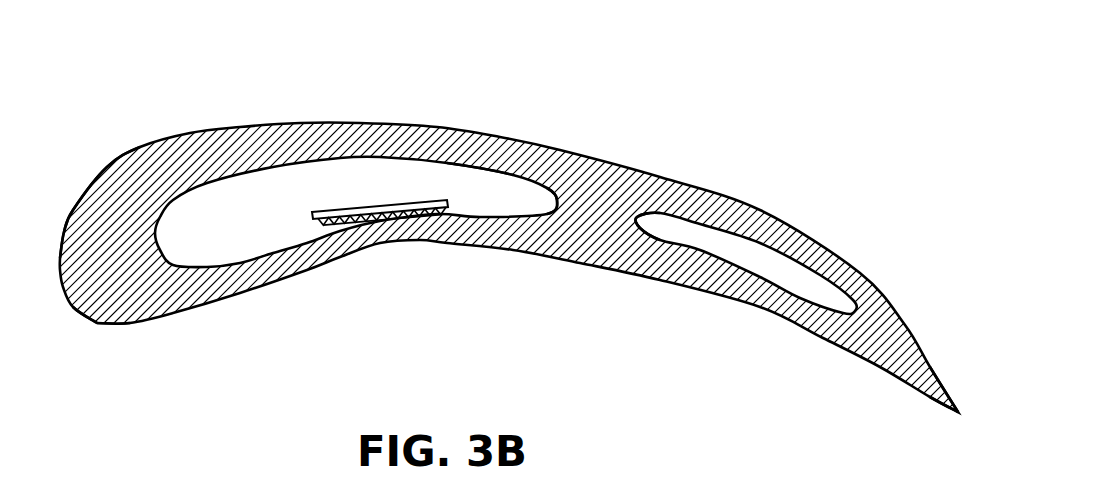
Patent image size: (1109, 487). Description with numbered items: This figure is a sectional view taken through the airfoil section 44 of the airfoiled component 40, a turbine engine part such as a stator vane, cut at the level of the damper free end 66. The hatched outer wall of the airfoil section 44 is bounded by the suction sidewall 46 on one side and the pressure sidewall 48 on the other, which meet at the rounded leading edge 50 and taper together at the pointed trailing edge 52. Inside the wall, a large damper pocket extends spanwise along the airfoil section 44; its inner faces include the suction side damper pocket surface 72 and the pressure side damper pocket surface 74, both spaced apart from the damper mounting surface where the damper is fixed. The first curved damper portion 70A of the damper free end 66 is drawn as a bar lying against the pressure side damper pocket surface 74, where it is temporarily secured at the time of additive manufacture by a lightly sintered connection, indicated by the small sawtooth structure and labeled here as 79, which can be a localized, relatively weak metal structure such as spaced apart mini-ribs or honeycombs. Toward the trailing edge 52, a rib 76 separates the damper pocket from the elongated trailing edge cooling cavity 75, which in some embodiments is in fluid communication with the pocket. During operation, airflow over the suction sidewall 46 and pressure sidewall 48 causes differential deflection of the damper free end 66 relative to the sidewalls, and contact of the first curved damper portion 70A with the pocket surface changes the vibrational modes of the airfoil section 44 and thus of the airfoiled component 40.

The airfoiled component 40 is at (742, 105).
The airfoil section 44 is at (94, 132).
The suction sidewall 46 is at (437, 118).
The pressure sidewall 48 is at (546, 268).
The leading edge 50 is at (76, 339).
The trailing edge 52 is at (946, 429).
The suction side damper pocket surface 72 is at (268, 248).
The trailing edge cooling cavity 75 is at (693, 240).
The rib 76 is at (580, 213).
The pressure side damper pocket surface 74 is at (468, 162).
The first curved damper portion 70A is at (387, 210).
The bond layer 79 is at (358, 223).
The damper free end 66 is at (286, 217).